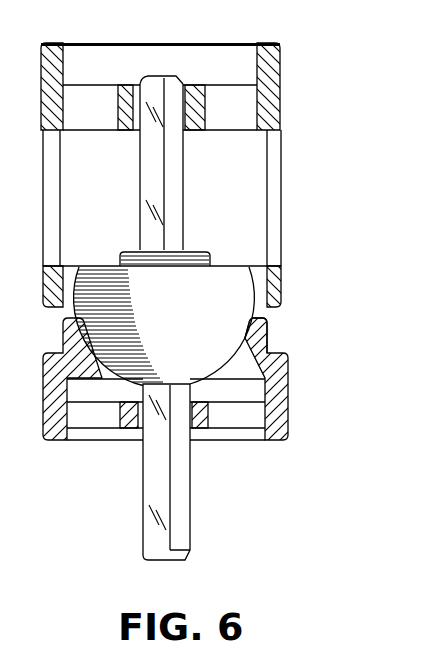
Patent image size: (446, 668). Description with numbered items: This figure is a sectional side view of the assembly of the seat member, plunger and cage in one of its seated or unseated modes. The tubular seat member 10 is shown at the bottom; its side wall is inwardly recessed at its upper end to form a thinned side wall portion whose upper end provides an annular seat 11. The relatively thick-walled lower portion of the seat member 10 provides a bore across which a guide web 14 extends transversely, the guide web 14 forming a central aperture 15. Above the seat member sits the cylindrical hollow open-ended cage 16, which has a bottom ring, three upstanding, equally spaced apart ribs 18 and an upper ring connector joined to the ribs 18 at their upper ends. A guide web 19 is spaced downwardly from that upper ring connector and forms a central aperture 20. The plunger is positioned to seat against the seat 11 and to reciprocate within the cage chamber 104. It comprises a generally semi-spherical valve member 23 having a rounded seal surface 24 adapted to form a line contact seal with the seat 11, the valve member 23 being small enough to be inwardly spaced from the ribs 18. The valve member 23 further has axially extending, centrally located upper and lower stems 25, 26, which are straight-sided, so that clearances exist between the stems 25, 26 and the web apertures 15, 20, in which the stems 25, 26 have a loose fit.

The seat member 10 is at (291, 399).
The annular seat 11 is at (256, 338).
The guide web 14 is at (241, 418).
The central aperture 15 is at (193, 438).
The cage 16 is at (288, 158).
The ribs 18 is at (283, 208).
The guide web 19 is at (100, 85).
The central aperture 20 is at (184, 82).
The valve member 23 is at (188, 332).
The seal surface 24 is at (248, 337).
The upper stem 25 is at (184, 183).
The lower stem 26 is at (191, 522).
The cage chamber 104 is at (122, 215).